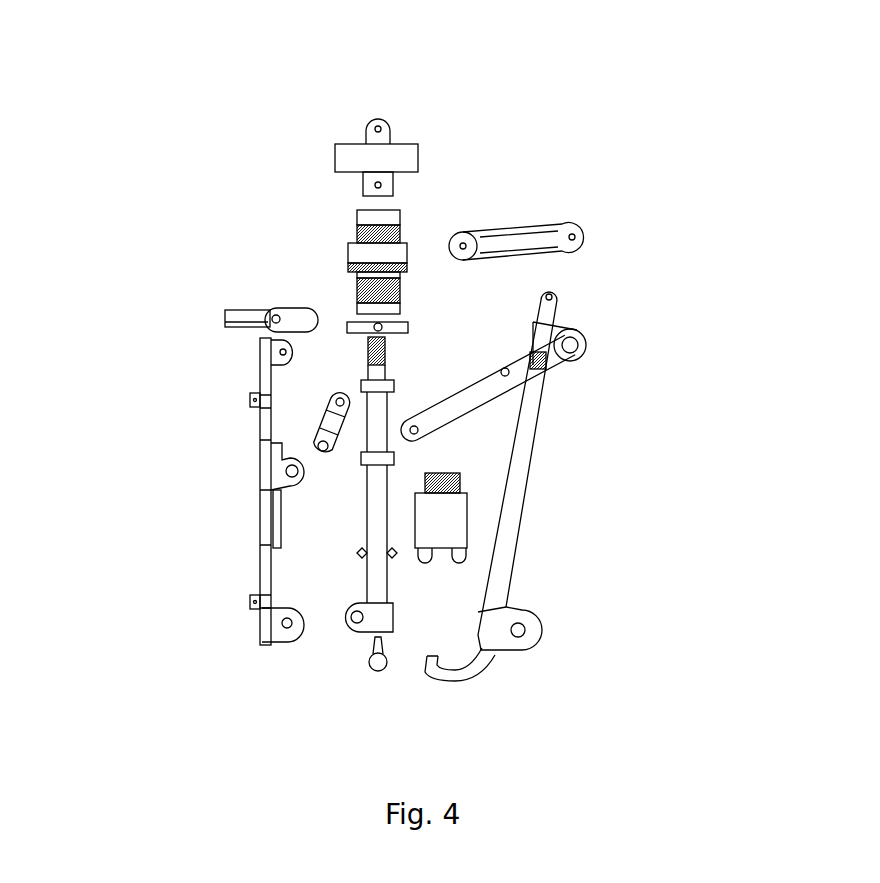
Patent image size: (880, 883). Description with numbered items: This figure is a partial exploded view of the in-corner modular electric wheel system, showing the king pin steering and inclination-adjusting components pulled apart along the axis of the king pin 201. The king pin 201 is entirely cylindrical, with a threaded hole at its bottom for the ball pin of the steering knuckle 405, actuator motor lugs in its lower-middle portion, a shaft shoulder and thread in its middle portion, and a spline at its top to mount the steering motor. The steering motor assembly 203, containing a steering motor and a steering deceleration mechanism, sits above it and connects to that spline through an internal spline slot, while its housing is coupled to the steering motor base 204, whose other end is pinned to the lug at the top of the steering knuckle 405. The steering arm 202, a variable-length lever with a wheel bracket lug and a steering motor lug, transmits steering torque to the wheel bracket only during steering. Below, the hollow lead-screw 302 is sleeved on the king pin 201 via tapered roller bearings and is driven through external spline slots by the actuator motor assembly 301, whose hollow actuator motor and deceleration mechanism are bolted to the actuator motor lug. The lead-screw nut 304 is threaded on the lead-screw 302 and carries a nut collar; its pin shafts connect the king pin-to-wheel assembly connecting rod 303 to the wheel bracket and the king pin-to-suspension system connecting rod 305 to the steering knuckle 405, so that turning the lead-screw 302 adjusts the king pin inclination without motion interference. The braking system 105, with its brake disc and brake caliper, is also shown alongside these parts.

The steering motor assembly 203 is at (380, 160).
The lead-screw nut 304 is at (368, 250).
The lead-screw 302 is at (380, 309).
The steering arm 202 is at (300, 320).
The king pin-to-wheel assembly connecting rod 303 is at (335, 422).
The braking system 105 is at (274, 617).
The steering motor base 204 is at (566, 233).
The king pin-to-suspension system connecting rod 305 is at (474, 392).
The actuator motor assembly 301 is at (440, 518).
The steering knuckle 405 is at (510, 527).
The king pin 201 is at (380, 615).